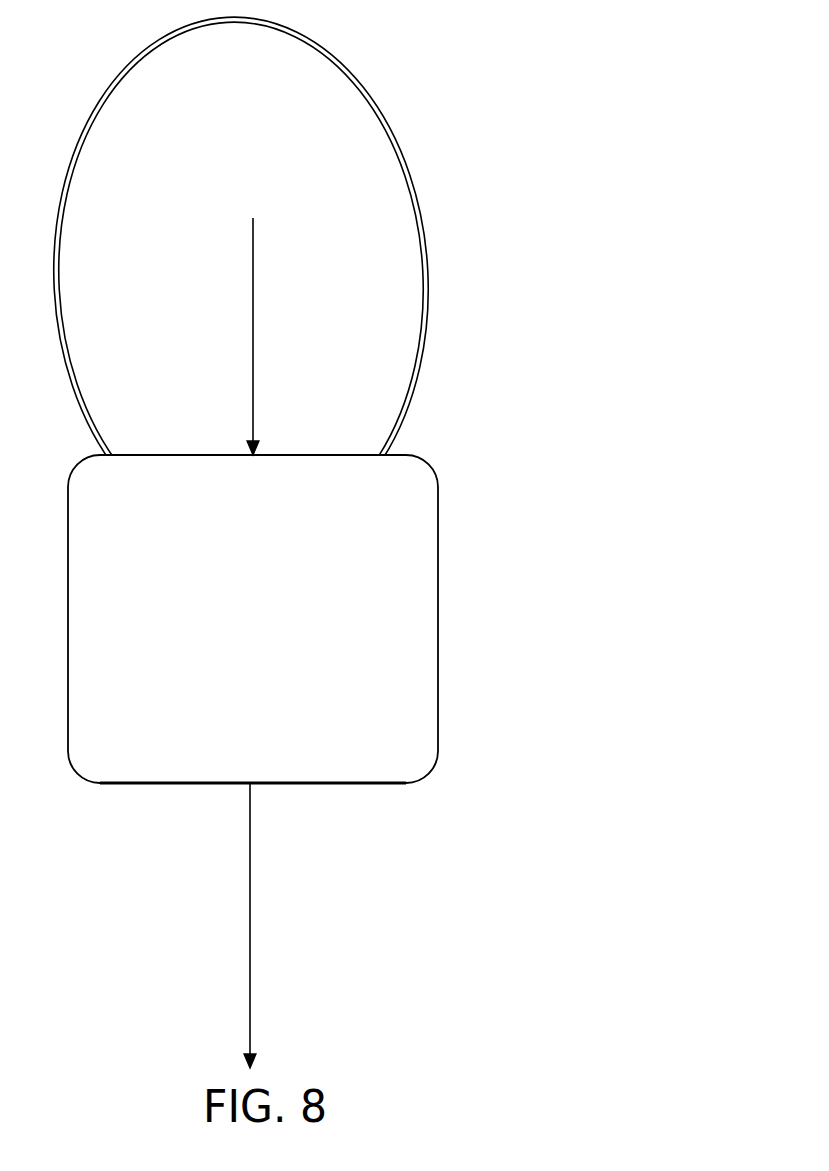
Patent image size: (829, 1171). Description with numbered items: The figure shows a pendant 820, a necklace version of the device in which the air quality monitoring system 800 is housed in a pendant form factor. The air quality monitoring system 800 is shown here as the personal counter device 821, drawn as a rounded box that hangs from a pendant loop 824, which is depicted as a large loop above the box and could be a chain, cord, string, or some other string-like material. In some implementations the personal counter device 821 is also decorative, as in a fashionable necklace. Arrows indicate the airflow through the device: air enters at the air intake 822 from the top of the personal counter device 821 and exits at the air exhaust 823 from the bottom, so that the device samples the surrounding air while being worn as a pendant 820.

The air quality monitoring system 800 is at (702, 339).
The pendant 820 is at (165, 788).
The personal counter device 821 is at (273, 659).
The air intake 822 is at (253, 326).
The air exhaust 823 is at (250, 920).
The pendant loop 824 is at (398, 170).